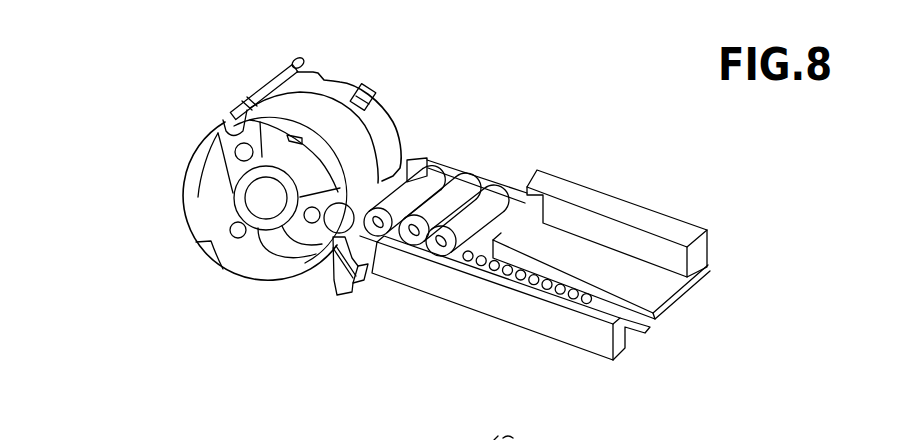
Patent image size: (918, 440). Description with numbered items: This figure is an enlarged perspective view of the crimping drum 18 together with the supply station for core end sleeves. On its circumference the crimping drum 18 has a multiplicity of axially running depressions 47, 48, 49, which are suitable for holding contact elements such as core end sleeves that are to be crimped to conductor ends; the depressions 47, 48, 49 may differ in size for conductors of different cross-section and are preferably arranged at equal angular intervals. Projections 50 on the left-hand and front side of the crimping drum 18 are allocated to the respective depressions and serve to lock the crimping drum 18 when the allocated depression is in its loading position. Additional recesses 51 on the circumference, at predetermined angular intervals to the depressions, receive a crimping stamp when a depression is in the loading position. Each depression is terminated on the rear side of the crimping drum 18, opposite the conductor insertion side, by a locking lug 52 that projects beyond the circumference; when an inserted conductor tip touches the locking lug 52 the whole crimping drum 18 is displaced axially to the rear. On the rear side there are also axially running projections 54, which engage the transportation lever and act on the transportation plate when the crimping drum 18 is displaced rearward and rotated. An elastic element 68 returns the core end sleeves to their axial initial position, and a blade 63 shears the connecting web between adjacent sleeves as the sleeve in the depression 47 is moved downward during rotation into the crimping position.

The crimping drum 18 is at (143, 349).
The depression 47 is at (347, 290).
The depression 48 is at (240, 110).
The depression 49 is at (227, 243).
The projections 50 is at (236, 151).
The additional recesses 51 is at (322, 84).
The locking lug 52 is at (295, 62).
The axially running projections 54 is at (377, 86).
The blade 63 is at (369, 268).
The elastic element 68 is at (483, 187).